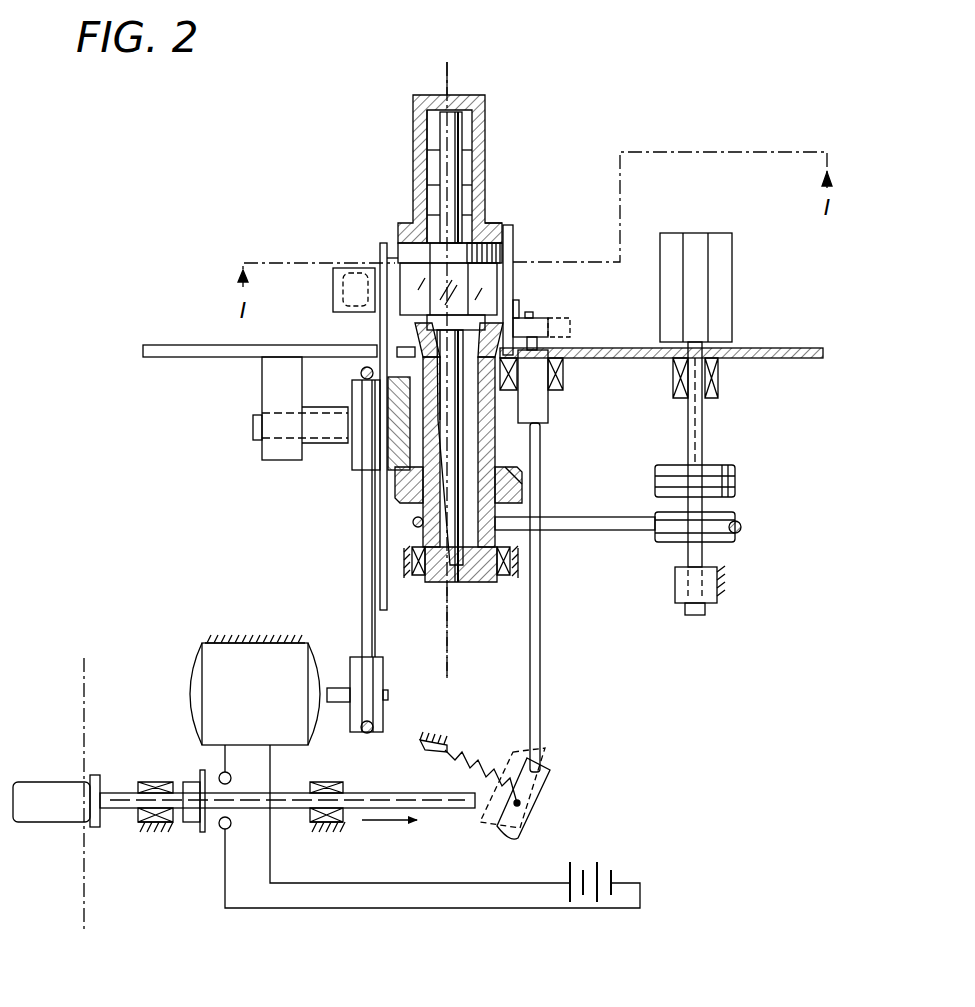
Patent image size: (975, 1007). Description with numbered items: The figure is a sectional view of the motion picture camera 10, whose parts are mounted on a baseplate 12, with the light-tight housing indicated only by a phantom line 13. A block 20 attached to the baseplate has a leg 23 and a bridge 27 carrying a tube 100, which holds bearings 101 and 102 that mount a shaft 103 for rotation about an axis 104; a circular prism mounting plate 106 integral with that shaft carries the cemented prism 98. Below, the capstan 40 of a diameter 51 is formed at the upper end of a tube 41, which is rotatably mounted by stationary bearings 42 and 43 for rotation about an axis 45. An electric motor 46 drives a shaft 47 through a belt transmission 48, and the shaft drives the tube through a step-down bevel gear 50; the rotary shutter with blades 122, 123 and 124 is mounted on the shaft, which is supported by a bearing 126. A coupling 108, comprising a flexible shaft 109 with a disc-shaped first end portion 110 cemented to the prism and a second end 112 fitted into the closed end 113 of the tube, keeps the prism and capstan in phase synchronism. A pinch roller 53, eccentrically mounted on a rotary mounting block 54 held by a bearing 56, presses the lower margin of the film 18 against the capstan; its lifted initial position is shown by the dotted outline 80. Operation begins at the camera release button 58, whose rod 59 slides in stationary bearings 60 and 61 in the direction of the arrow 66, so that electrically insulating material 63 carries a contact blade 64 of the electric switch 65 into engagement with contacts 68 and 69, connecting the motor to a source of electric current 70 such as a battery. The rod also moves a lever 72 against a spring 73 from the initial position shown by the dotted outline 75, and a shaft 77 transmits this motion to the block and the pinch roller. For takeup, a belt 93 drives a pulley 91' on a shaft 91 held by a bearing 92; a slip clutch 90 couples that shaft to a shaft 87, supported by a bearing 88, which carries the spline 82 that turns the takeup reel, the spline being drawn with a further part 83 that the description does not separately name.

The motion picture camera 10 is at (770, 348).
The baseplate 12 is at (170, 345).
The phantom line 13 is at (84, 673).
The motion picture film 18 is at (512, 235).
The block 20 is at (400, 232).
The leg 23 is at (398, 262).
The bridge 27 is at (488, 225).
The capstan 40 is at (427, 324).
The tube 41 is at (495, 452).
The stationary bearing 42 is at (360, 376).
The stationary bearing 43 is at (418, 580).
The axis 45 is at (455, 645).
The electric motor 46 is at (202, 672).
The shaft 47 is at (256, 430).
The belt transmission 48 is at (362, 598).
The bevel gear 50 is at (410, 482).
The diameter 51 is at (513, 312).
The pinch roller 53 is at (540, 318).
The rotary mounting block 54 is at (533, 386).
The bearing 56 is at (563, 378).
The camera release button 58 is at (60, 782).
The rod 59 is at (440, 795).
The stationary bearing 60 is at (155, 782).
The stationary bearing 61 is at (328, 782).
The electrically insulating material 63 is at (190, 824).
The contact blade 64 is at (204, 772).
The electric switch 65 is at (213, 848).
The arrow 66 is at (380, 830).
The contact 68 is at (231, 778).
The contact 69 is at (231, 823).
The source of electric current 70 is at (611, 872).
The lever 72 is at (525, 838).
The spring 73 is at (462, 770).
The dotted outline 75 is at (530, 820).
The shaft 77 is at (540, 625).
The dotted outline 80 is at (572, 330).
The spline 82 is at (735, 250).
The piston rod 83 is at (700, 300).
The shaft 87 is at (702, 436).
The bearing 88 is at (718, 385).
The slip clutch 90 is at (735, 472).
The shaft 91 is at (712, 507).
The pulley 91' is at (763, 514).
The bearing 92 is at (676, 598).
The belt 93 is at (590, 530).
The prism 98 is at (472, 282).
The tube 100 is at (487, 110).
The bearing 101 is at (466, 140).
The bearing 102 is at (427, 180).
The shaft 103 is at (440, 122).
The axis 104 is at (452, 90).
The prism mounting plate 106 is at (495, 258).
The coupling 108 is at (520, 490).
The flexible shaft 109 is at (468, 452).
The first end portion 110 is at (333, 302).
The second end 112 is at (468, 578).
The closed end 113 is at (457, 584).
The shutter blade 122 is at (382, 246).
The shutter blade 123 is at (398, 470).
The shutter blade 124 is at (372, 548).
The bearing 126 is at (262, 385).